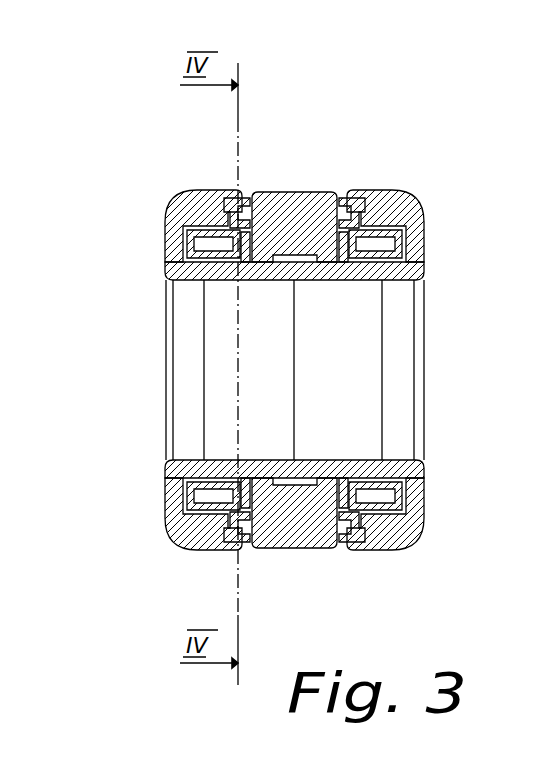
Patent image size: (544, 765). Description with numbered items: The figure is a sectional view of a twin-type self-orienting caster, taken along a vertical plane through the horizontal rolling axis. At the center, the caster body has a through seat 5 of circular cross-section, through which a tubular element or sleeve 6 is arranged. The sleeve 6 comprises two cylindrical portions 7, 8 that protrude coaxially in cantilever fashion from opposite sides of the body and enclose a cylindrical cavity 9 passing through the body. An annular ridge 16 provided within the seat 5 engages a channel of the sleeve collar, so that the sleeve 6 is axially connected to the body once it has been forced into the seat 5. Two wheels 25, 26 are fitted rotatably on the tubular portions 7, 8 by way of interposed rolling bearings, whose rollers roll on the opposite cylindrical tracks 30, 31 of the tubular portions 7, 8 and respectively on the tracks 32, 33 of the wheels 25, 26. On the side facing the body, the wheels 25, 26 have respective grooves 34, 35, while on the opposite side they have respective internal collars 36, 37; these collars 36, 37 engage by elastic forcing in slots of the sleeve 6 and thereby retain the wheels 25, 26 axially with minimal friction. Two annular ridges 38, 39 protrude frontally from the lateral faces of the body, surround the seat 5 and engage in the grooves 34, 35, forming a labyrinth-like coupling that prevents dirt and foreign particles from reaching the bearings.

The through seat 5 is at (345, 286).
The sleeve 6 is at (326, 452).
The cylindrical portion 7 is at (230, 462).
The cylindrical portion 8 is at (400, 462).
The cylindrical cavity 9 is at (230, 310).
The annular ridge 16 is at (290, 490).
The wheel 25 is at (176, 549).
The wheel 26 is at (413, 549).
The cylindrical track 30 is at (172, 218).
The cylindrical track 31 is at (412, 207).
The cylindrical track 32 is at (200, 192).
The cylindrical track 33 is at (387, 205).
The groove 34 is at (262, 556).
The groove 35 is at (322, 556).
The internal collar 36 is at (172, 500).
The internal collar 37 is at (422, 497).
The annular ridge 38 is at (276, 192).
The annular ridge 39 is at (342, 206).